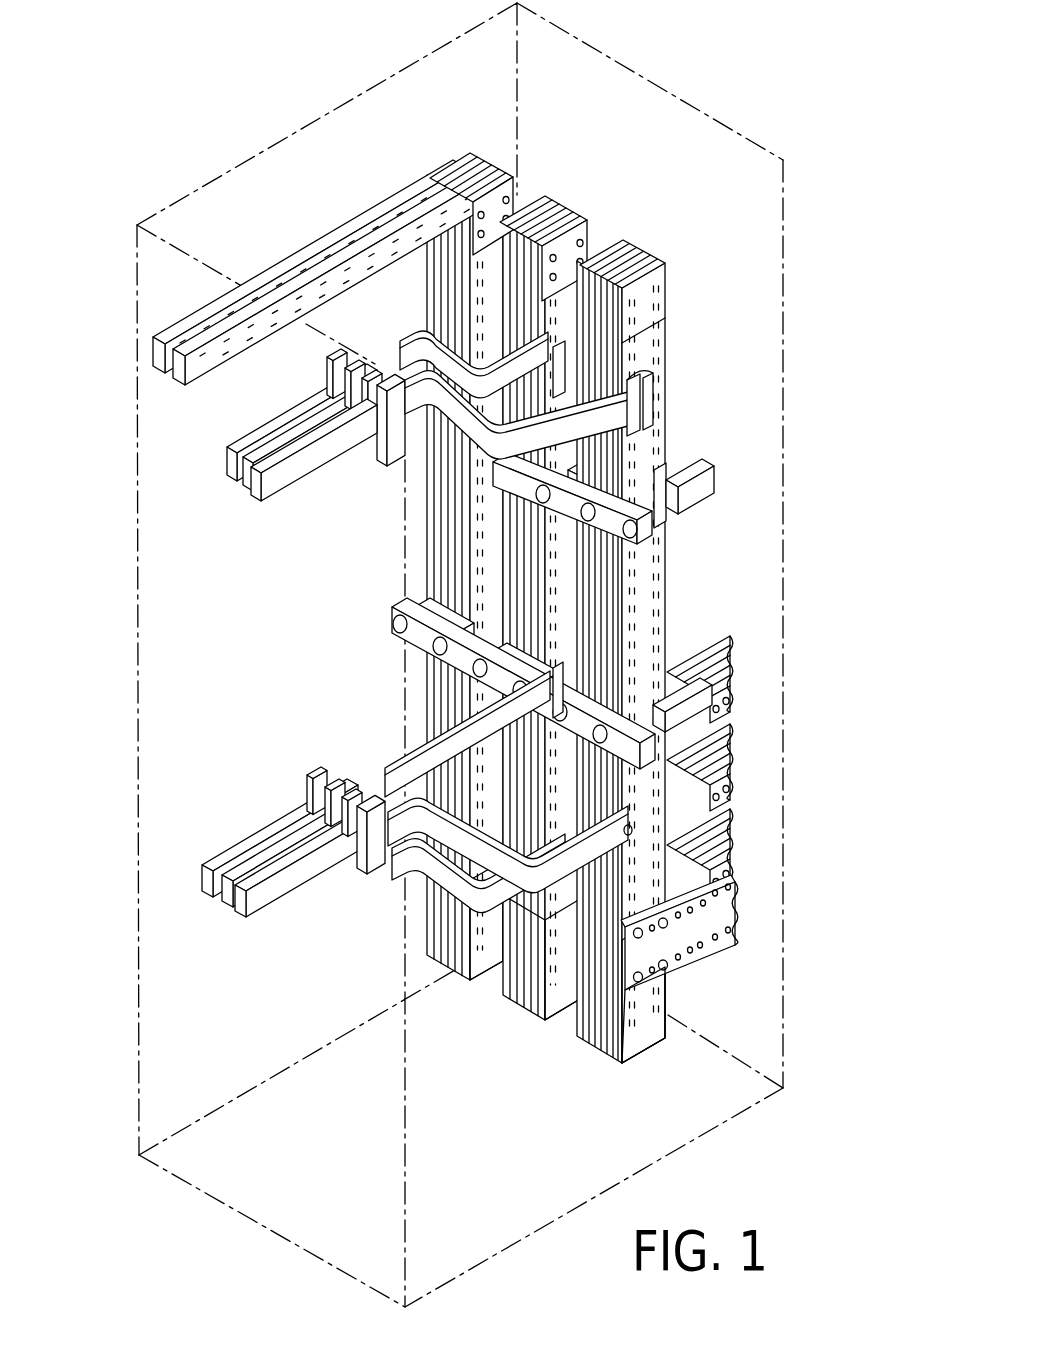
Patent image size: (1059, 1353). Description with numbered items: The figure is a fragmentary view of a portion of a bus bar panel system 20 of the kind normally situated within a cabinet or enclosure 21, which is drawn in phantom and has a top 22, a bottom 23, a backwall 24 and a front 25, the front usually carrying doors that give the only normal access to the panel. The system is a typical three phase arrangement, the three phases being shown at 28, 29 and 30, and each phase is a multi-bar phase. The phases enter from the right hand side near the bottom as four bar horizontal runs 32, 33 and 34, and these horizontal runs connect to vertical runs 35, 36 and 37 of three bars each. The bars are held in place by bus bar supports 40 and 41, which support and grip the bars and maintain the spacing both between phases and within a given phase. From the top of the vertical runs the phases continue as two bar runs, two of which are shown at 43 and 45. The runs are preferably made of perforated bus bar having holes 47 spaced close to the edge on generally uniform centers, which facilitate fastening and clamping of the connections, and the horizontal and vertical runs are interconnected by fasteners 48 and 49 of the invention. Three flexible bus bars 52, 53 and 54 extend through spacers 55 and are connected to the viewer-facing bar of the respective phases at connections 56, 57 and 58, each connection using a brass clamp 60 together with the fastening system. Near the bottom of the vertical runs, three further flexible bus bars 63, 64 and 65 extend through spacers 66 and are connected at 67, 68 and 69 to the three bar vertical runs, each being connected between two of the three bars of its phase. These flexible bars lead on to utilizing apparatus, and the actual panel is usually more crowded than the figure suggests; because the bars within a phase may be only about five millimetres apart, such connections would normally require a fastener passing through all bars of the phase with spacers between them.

The bus bar panel system 20 is at (491, 636).
The cabinet or enclosure 21 is at (459, 655).
The top 22 is at (697, 147).
The bottom 23 is at (690, 1140).
The backwall 24 is at (152, 662).
The front 25 is at (757, 640).
The phase 28 is at (440, 970).
The phase 29 is at (522, 1022).
The phase 30 is at (605, 1070).
The four bar phase 32 is at (720, 675).
The four bar phase 33 is at (735, 800).
The four bar phase 34 is at (743, 900).
The vertical run 35 is at (428, 516).
The vertical run 36 is at (500, 567).
The vertical run 37 is at (668, 582).
The bus bar support 40 is at (722, 497).
The bus bar support 41 is at (398, 645).
The two bar run 43 is at (353, 228).
The two bar run 45 is at (413, 280).
The holes 47 is at (665, 316).
The fastener 48 is at (665, 298).
The fastener 49 is at (670, 965).
The flexible bus bar 52 is at (240, 445).
The flexible bus bar 53 is at (238, 492).
The flexible bus bar 54 is at (300, 478).
The spacers 55 is at (325, 375).
The connection 56 is at (480, 332).
The connection 57 is at (572, 362).
The connection 58 is at (661, 400).
The brass clamp 60 is at (660, 415).
The flexible bus bar 63 is at (225, 845).
The flexible bus bar 64 is at (215, 893).
The flexible bus bar 65 is at (280, 880).
The spacers 66 is at (305, 775).
The connection 67 is at (458, 720).
The connection 68 is at (440, 840).
The connection 69 is at (633, 830).